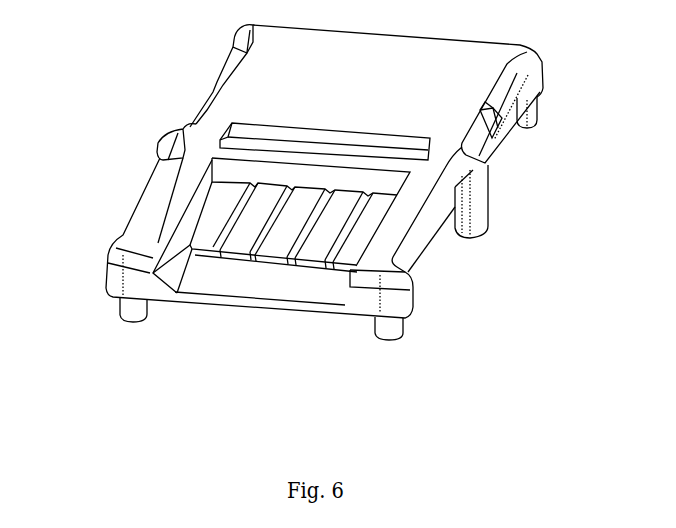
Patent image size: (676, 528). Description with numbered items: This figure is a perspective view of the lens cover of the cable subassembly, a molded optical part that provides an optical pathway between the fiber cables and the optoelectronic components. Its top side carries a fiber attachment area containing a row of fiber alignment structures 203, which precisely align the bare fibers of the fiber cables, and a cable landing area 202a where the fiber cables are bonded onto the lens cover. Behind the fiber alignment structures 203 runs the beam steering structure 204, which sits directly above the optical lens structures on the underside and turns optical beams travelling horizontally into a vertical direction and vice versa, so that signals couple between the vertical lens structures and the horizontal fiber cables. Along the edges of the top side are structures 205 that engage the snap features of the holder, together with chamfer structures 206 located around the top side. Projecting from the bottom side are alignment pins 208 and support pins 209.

The cable landing area 202a is at (187, 295).
The fiber alignment structures 203 is at (350, 264).
The beam steering structure 204 is at (312, 124).
The structures for engaging with the snap features 205 is at (500, 134).
The chamfer structures 206 is at (162, 140).
The alignment pins 208 is at (490, 218).
The support pins 209 is at (537, 108).